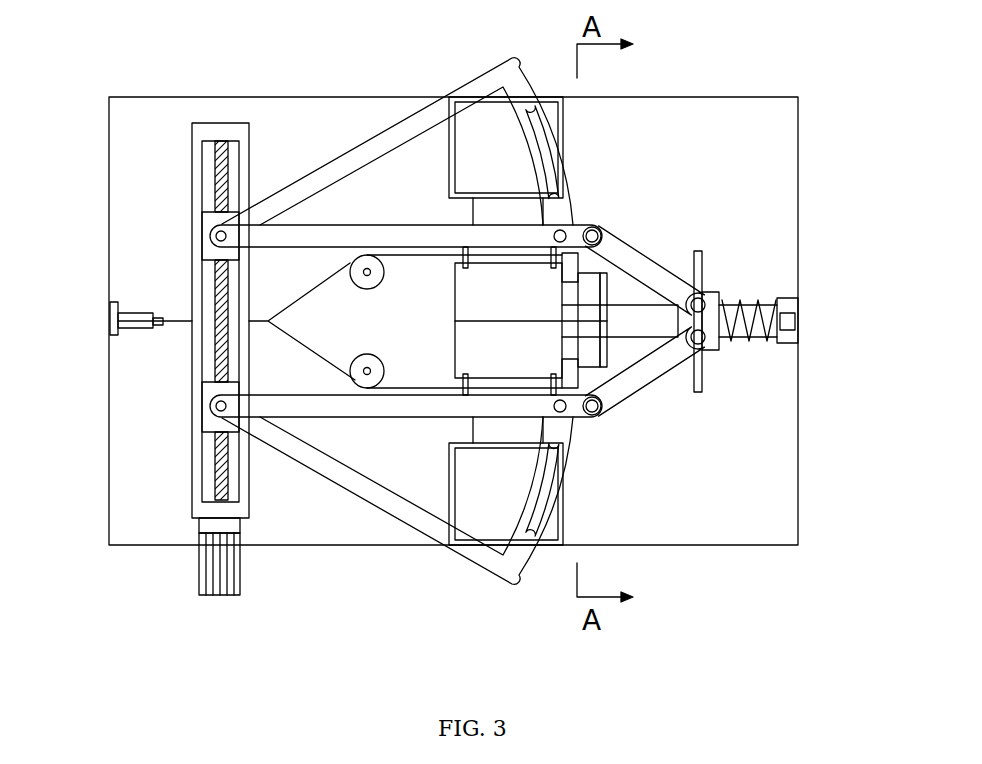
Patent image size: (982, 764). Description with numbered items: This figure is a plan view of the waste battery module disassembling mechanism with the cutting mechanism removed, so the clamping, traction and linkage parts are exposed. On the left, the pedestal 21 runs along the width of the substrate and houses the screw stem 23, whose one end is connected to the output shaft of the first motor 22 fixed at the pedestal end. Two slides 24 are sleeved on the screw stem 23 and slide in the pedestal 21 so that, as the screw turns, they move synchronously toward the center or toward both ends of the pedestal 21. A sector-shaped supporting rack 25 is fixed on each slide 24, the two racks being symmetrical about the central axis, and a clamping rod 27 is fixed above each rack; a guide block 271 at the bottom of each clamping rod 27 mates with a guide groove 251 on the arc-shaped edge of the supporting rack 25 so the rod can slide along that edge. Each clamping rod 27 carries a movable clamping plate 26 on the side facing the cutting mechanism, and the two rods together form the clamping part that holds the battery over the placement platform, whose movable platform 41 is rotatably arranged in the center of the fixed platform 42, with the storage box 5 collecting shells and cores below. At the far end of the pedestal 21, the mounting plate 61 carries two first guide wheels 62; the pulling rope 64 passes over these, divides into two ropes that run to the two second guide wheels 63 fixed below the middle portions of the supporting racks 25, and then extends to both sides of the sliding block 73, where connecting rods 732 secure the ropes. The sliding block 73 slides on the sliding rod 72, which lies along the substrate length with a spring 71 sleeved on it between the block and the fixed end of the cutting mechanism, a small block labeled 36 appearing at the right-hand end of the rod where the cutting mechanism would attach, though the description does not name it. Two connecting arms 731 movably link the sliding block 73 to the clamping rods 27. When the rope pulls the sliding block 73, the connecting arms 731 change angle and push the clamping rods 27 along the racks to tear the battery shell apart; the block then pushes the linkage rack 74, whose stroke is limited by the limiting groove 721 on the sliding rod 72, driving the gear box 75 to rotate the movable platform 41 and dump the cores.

The pedestal 21 is at (193, 183).
The first motor 22 is at (202, 572).
The screw stem 23 is at (215, 347).
The slide 24 is at (209, 252).
The supporting rack 25 is at (300, 452).
The movable clamping plate 26 is at (465, 382).
The clamping rod 27 is at (382, 407).
The guide block 271 is at (560, 407).
The guide groove 251 is at (532, 530).
The fixed block 36 is at (786, 321).
The movable platform 41 is at (552, 302).
The fixed platform 42 is at (533, 213).
The storage box 5 is at (478, 152).
The mounting plate 61 is at (115, 320).
The first guide wheel 62 is at (137, 321).
The second guide wheel 63 is at (356, 367).
The pulling rope 64 is at (298, 342).
The spring 71 is at (702, 271).
The sliding rod 72 is at (753, 315).
The limiting groove 721 is at (709, 317).
The sliding block 73 is at (606, 322).
The connecting arm 731 is at (571, 373).
The connecting rod 732 is at (582, 321).
The linkage rack 74 is at (632, 382).
The gear box 75 is at (553, 390).